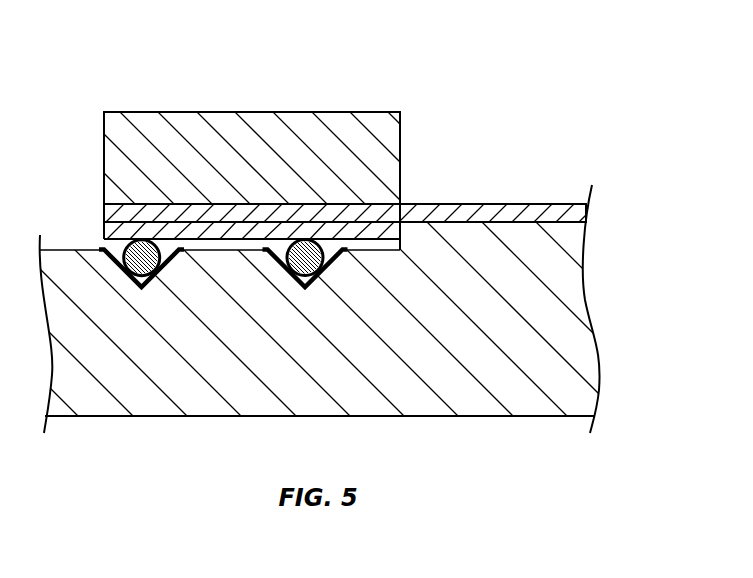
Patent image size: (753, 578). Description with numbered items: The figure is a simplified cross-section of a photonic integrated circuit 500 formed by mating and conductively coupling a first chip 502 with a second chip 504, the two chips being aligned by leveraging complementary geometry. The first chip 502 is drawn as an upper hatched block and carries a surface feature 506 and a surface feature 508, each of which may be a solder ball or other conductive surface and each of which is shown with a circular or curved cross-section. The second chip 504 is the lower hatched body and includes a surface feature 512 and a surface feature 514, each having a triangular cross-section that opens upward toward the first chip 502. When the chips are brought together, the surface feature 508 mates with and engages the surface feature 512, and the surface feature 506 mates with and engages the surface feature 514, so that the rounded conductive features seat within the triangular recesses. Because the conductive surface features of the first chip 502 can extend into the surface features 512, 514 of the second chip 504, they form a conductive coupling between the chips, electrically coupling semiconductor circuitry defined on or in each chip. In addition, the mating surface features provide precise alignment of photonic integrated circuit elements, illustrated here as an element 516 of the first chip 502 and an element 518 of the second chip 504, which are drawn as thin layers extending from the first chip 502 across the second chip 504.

The photonic integrated circuit 500 is at (44, 58).
The first chip 502 is at (376, 103).
The second chip 504 is at (622, 320).
The surface feature 506 is at (128, 269).
The surface feature 508 is at (290, 270).
The surface feature 512 is at (333, 263).
The surface feature 514 is at (166, 266).
The element 516 is at (105, 212).
The element 518 is at (512, 203).